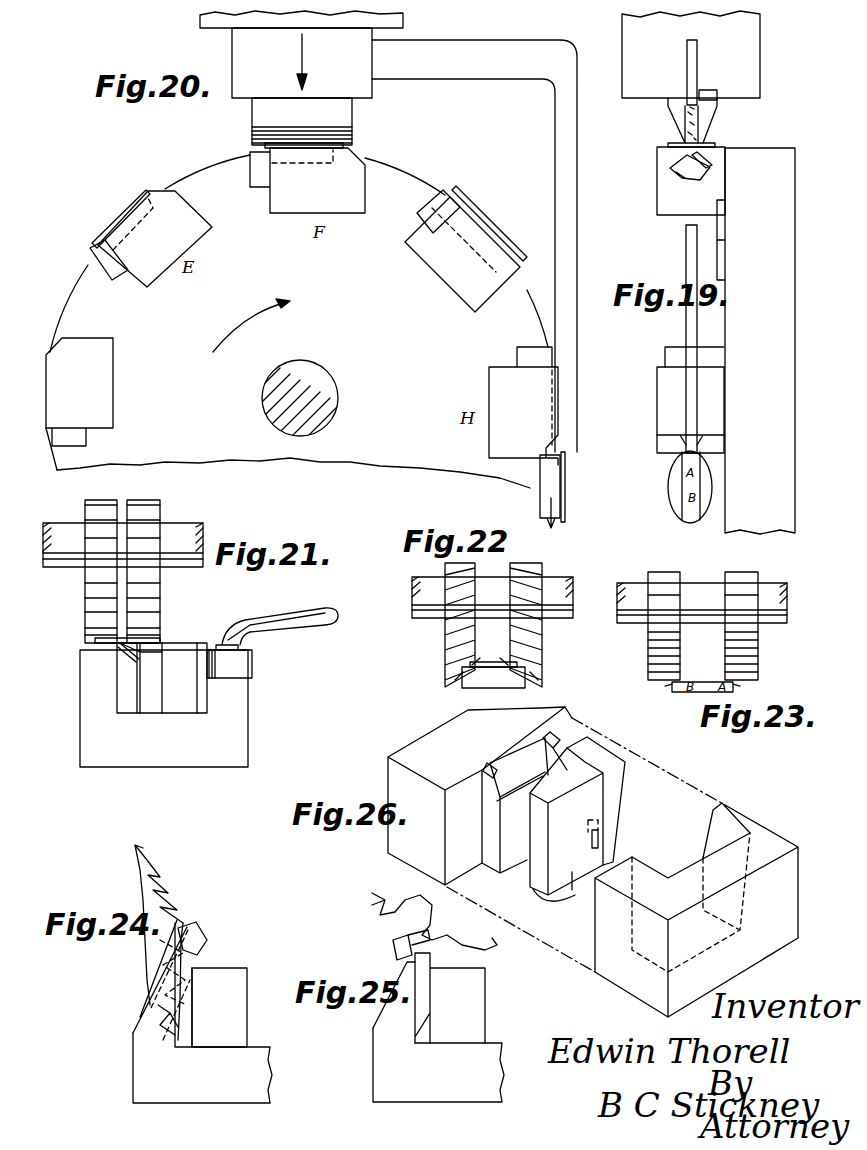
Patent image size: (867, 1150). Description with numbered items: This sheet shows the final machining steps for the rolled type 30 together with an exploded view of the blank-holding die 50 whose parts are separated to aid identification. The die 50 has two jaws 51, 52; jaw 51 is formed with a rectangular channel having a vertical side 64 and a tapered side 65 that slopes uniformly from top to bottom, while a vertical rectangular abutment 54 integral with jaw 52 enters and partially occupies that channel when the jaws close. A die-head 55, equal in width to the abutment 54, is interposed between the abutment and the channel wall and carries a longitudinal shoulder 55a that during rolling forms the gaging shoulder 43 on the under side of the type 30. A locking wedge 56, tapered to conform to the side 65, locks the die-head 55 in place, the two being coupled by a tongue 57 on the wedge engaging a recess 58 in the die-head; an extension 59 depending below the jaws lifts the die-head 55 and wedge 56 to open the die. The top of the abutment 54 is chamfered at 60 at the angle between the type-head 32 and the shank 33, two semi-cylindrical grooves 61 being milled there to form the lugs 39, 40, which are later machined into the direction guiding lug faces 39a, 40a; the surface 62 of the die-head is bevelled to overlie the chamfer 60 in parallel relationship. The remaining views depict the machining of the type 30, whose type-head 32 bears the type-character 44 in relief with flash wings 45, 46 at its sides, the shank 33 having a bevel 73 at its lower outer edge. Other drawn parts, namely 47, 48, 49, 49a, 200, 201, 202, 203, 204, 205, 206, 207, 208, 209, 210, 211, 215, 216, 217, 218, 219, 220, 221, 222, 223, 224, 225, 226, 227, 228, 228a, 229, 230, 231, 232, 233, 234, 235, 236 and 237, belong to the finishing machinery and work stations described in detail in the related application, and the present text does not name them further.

In FIG. 20, the rolled type 30 is at (133, 193).
In FIG. 19, the rolled type 30 is at (672, 518).
In FIG. 23, the rolled type 30 is at (678, 694).
In FIG. 24, the rolled type 30 is at (211, 940).
In FIG. 25, the rolled type 30 is at (397, 952).
In FIG. 20, the type-head 32 is at (345, 137).
In FIG. 19, the type-head 32 is at (700, 545).
In FIG. 21, the type-head 32 is at (100, 645).
In FIG. 22, the type-head 32 is at (493, 655).
In FIG. 24, the type-head 32 is at (203, 935).
In FIG. 20, the shank 33 is at (421, 350).
In FIG. 19, the shank 33 is at (690, 180).
In FIG. 21, the shank 33 is at (122, 658).
In FIG. 22, the shank 33 is at (493, 677).
In FIG. 24, the shank 33 is at (185, 1008).
In FIG. 25, the shank 33 is at (432, 1004).
In FIG. 22, the lug 39 is at (476, 662).
In FIG. 23, the direction guiding lug face 39a is at (724, 682).
In FIG. 24, the direction guiding lug face 39a is at (202, 911).
In FIG. 25, the direction guiding lug face 39a is at (432, 952).
In FIG. 19, the lug 40 is at (676, 170).
In FIG. 22, the lug 40 is at (530, 670).
In FIG. 23, the direction guiding lug face 40a is at (680, 672).
In FIG. 19, the shoulder 43 is at (703, 152).
In FIG. 21, the shoulder 43 is at (120, 638).
In FIG. 24, the shoulder 43 is at (160, 958).
In FIG. 25, the shoulder 43 is at (400, 980).
In FIG. 19, the type-character 44 is at (692, 472).
In FIG. 19, the wing 45 is at (712, 478).
In FIG. 20, the wing 46 is at (288, 176).
In FIG. 19, the wing 46 is at (672, 140).
In FIG. 24, the lug 47 is at (165, 1027).
In FIG. 24, the edge 48 is at (200, 955).
In FIG. 25, the edge 48 is at (393, 944).
In FIG. 22, the edge 49 is at (457, 664).
In FIG. 23, the edge 49 is at (668, 686).
In FIG. 24, the edge 49 is at (183, 918).
In FIG. 25, the edge 49 is at (408, 937).
In FIG. 25, the edge 49a is at (432, 940).
In FIG. 26, the blank-holding die 50 is at (394, 744).
In FIG. 26, the jaw 51 is at (622, 867).
In FIG. 26, the jaw 52 is at (480, 796).
In FIG. 26, the abutment 54 is at (504, 835).
In FIG. 26, the die-head 55 is at (566, 821).
In FIG. 26, the longitudinal shoulder 55a is at (538, 786).
In FIG. 26, the locking wedge 56 is at (596, 801).
In FIG. 26, the tongue 57 is at (600, 840).
In FIG. 26, the recess 58 is at (592, 838).
In FIG. 26, the extension 59 is at (554, 893).
In FIG. 26, the chamfer 60 is at (508, 760).
In FIG. 26, the semi-cylindrical groove 61 is at (546, 745).
In FIG. 26, the bevelled surface 62 is at (530, 812).
In FIG. 26, the vertical side 64 is at (665, 877).
In FIG. 26, the tapered side 65 is at (722, 838).
In FIG. 26, the bevel 73 is at (650, 862).
In FIG. 20, the work holder 200 is at (368, 201).
In FIG. 19, the work holder 200 is at (738, 403).
In FIG. 19, the cutting tool 201 is at (714, 160).
In FIG. 20, the plate 202 is at (307, 180).
In FIG. 19, the plate 202 is at (662, 153).
In FIG. 20, the rotary table 203 is at (297, 321).
In FIG. 19, the rotary table 203 is at (756, 341).
In FIG. 20, the shaft 204 is at (262, 399).
In FIG. 20, the press plate 205 is at (403, 22).
In FIG. 20, the press head 206 is at (302, 63).
In FIG. 19, the press head 206 is at (691, 54).
In FIG. 20, the nozzle body 207 is at (302, 121).
In FIG. 19, the nozzle body 207 is at (716, 100).
In FIG. 19, the plate 208 is at (670, 113).
In FIG. 19, the tip 209 is at (686, 522).
In FIG. 19, the abrasive 210 is at (697, 124).
In FIG. 20, the rod 211 is at (578, 263).
In FIG. 19, the rod 211 is at (690, 85).
In FIG. 21, the base 215 is at (164, 708).
In FIG. 21, the block 216 is at (162, 678).
In FIG. 21, the block 217 is at (132, 682).
In FIG. 21, the clamp 218 is at (145, 652).
In FIG. 21, the clamp 219 is at (132, 659).
In FIG. 21, the bracket 220 is at (252, 672).
In FIG. 21, the handle 221 is at (318, 632).
In FIG. 21, the grinding wheel 222 is at (160, 590).
In FIG. 21, the grinding wheel 223 is at (85, 594).
In FIG. 21, the shaft 224 is at (123, 545).
In FIG. 22, the shaft 224 is at (492, 597).
In FIG. 22, the grinding wheel 225 is at (538, 636).
In FIG. 22, the grinding wheel 226 is at (445, 628).
In FIG. 23, the grinding wheel 227 is at (758, 652).
In FIG. 23, the grinding wheel 228 is at (648, 650).
In FIG. 23, the shaft 228a is at (702, 603).
In FIG. 24, the block 229 is at (247, 998).
In FIG. 24, the plate 230 is at (140, 1020).
In FIG. 24, the base 231 is at (202, 1068).
In FIG. 24, the edge 232 is at (155, 998).
In FIG. 24, the strip 233 is at (192, 988).
In FIG. 24, the edge 234 is at (160, 968).
In FIG. 24, the saw blade 235 is at (160, 882).
In FIG. 25, the base 236 is at (438, 1065).
In FIG. 25, the rough blank 237 is at (410, 915).